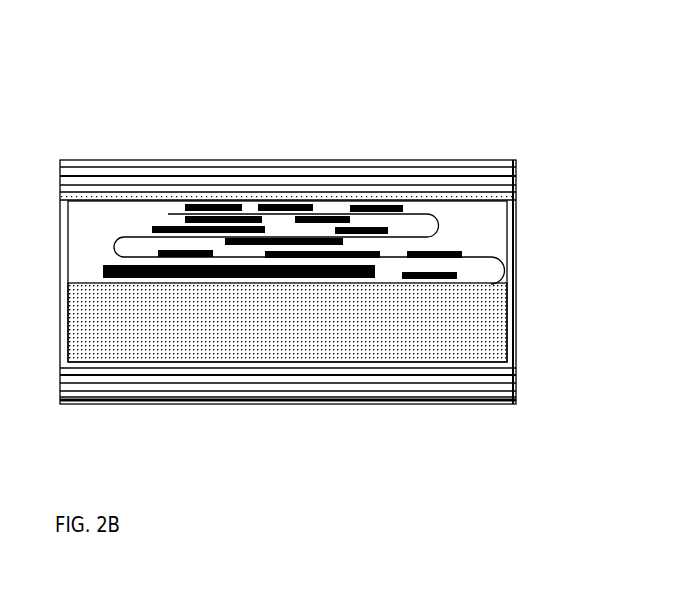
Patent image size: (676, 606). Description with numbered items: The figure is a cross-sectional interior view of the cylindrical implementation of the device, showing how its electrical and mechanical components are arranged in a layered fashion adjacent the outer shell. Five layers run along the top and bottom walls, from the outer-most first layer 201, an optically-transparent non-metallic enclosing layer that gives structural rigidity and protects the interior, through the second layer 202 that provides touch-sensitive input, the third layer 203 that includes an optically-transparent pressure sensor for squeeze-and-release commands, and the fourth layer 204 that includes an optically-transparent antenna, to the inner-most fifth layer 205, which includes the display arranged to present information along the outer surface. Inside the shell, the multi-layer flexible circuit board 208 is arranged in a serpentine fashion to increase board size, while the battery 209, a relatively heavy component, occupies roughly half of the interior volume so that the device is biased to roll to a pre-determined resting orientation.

The first layer 201 is at (124, 150).
The second layer 202 is at (193, 158).
The third layer 203 is at (254, 171).
The fourth layer 204 is at (324, 178).
The fifth layer 205 is at (385, 188).
The circuit board 208 is at (382, 249).
The battery 209 is at (372, 333).